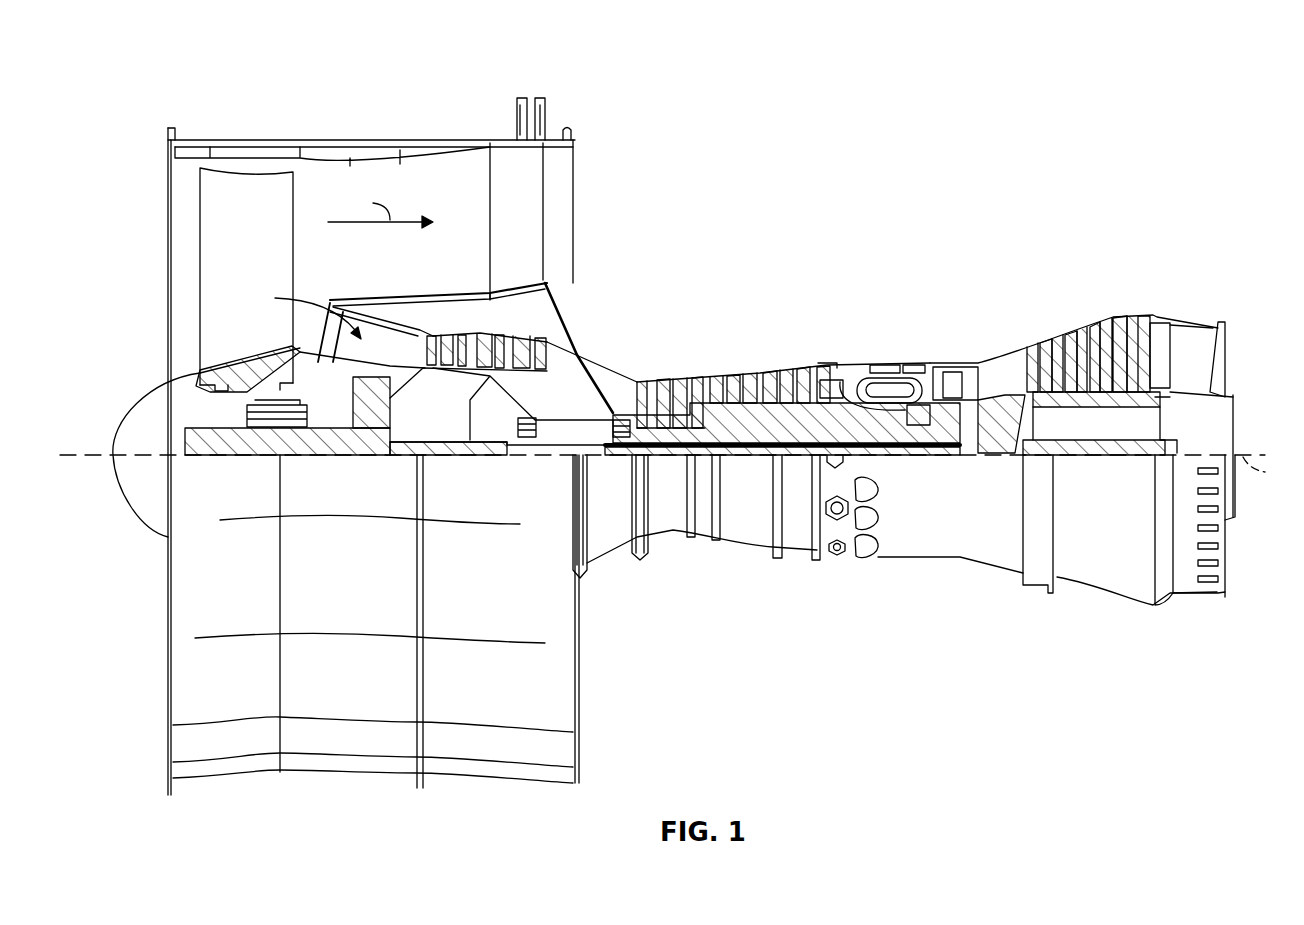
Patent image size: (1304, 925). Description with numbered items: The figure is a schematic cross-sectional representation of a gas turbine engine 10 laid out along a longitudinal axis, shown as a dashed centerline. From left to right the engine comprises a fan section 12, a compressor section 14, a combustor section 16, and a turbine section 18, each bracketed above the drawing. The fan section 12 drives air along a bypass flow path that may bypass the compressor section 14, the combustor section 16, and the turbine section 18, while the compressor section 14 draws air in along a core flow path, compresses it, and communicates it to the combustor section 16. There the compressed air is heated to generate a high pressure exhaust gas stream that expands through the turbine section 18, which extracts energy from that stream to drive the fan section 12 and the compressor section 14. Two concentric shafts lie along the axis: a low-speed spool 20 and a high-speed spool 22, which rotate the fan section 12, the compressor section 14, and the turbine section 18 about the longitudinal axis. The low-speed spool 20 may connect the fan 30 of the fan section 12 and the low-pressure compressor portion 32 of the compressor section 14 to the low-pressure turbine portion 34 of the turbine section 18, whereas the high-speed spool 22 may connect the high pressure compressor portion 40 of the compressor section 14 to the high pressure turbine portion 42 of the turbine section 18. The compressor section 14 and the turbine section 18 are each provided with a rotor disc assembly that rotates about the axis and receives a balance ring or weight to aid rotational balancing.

The gas turbine engine 10 is at (940, 137).
The fan section 12 is at (153, 107).
The compressor section 14 is at (415, 272).
The combustor section 16 is at (813, 272).
The turbine section 18 is at (937, 272).
The low-speed spool 20 is at (755, 456).
The high-speed spool 22 is at (777, 417).
The fan 30 is at (262, 270).
The low-pressure compressor portion 32 is at (505, 347).
The low-pressure turbine portion 34 is at (1100, 318).
The high pressure compressor portion 40 is at (723, 423).
The high pressure turbine portion 42 is at (950, 365).